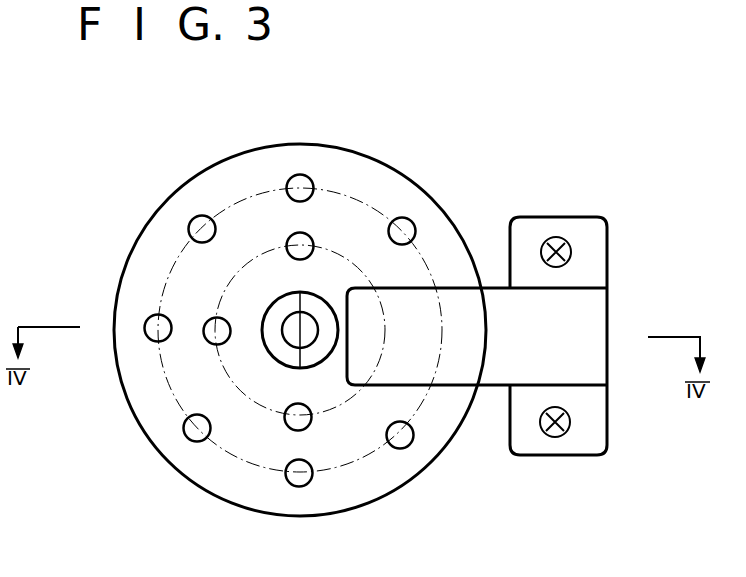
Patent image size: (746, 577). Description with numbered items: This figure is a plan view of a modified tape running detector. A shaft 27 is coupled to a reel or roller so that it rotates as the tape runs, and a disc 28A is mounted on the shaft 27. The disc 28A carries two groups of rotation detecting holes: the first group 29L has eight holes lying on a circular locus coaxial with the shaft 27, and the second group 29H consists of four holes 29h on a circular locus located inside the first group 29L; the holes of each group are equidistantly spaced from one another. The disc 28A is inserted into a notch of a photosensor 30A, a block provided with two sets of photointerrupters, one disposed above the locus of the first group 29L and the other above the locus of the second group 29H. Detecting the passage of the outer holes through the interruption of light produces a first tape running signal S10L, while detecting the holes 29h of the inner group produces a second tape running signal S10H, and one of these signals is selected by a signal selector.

The disc 28A is at (230, 173).
The shaft 27 is at (290, 328).
The first group of rotation detecting holes 29L is at (176, 401).
The second group of rotation detecting holes 29H is at (265, 410).
The holes 29h is at (303, 245).
The photosensor 30A is at (532, 456).
The second tape running signal S10H is at (608, 318).
The first tape running signal S10L is at (608, 368).